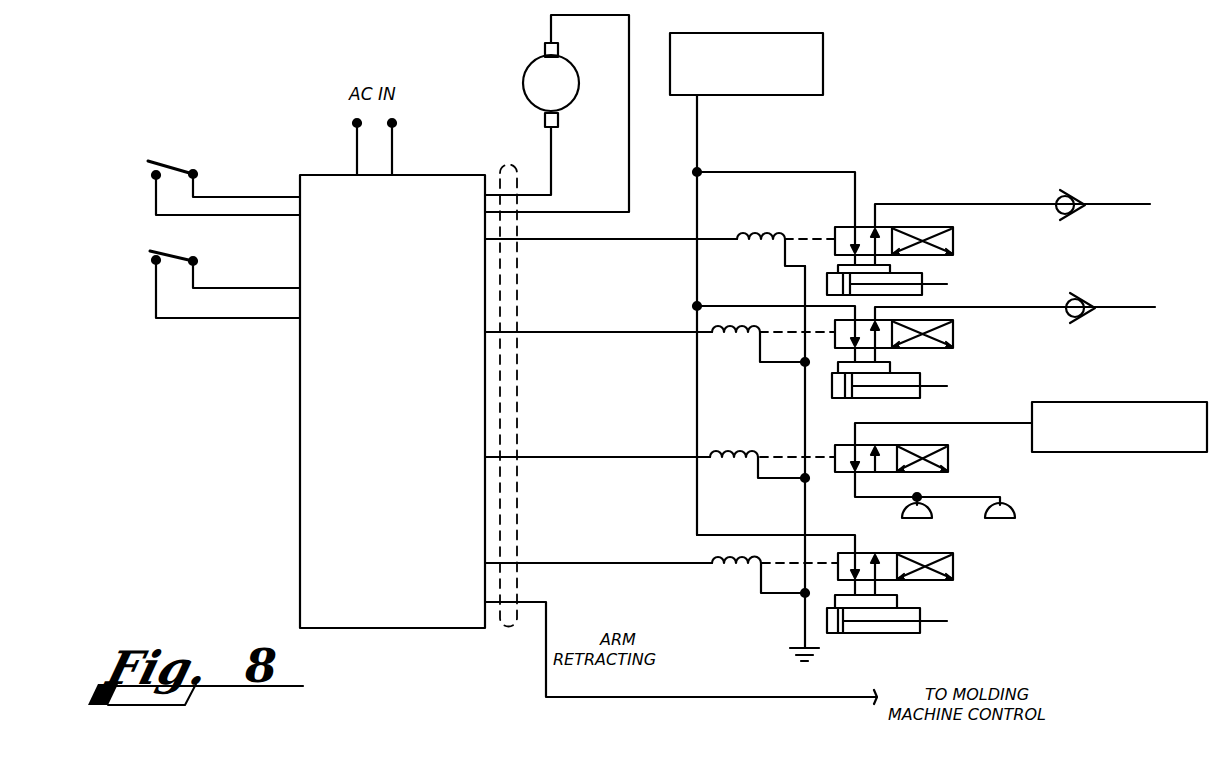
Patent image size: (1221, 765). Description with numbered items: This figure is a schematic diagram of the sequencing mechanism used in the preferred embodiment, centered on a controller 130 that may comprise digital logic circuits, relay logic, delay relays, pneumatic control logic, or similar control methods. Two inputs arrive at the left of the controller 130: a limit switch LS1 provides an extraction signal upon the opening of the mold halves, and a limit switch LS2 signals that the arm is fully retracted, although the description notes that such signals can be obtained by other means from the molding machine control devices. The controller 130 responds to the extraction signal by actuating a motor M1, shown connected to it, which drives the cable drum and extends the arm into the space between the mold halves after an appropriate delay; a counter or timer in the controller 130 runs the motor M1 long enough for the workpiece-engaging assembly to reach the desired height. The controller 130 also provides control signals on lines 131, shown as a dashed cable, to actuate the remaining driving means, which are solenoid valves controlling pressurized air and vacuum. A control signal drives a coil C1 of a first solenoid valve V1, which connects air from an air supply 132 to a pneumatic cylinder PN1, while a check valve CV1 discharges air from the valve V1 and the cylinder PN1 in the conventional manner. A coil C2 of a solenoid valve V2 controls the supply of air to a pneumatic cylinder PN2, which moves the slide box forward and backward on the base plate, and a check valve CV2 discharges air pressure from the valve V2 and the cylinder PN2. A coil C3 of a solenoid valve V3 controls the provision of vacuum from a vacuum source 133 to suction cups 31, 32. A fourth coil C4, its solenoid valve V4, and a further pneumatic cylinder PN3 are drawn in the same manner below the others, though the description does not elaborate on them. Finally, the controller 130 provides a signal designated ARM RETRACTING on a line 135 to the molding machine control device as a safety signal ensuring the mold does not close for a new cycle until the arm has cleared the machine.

The controller 130 is at (300, 402).
The lines 131 is at (527, 140).
The air supply 132 is at (823, 56).
The vacuum source 133 is at (1150, 453).
The line 135 is at (775, 697).
The suction cup 31 is at (933, 514).
The suction cup 32 is at (1015, 512).
The limit switch LS1 is at (172, 163).
The limit switch LS2 is at (172, 255).
The motor M1 is at (557, 113).
The coil C1 is at (792, 200).
The coil C2 is at (757, 325).
The coil C3 is at (748, 450).
The solenoid coil C4 is at (742, 556).
The first solenoid valve V1 is at (953, 240).
The solenoid valve V2 is at (953, 340).
The solenoid valve V3 is at (948, 463).
The solenoid valve V4 is at (953, 570).
The pneumatic cylinder PN1 is at (912, 269).
The pneumatic cylinder PN2 is at (948, 402).
The pneumatic cylinder PN3 is at (905, 635).
The check valve CV1 is at (1078, 197).
The check valve CV2 is at (1085, 318).